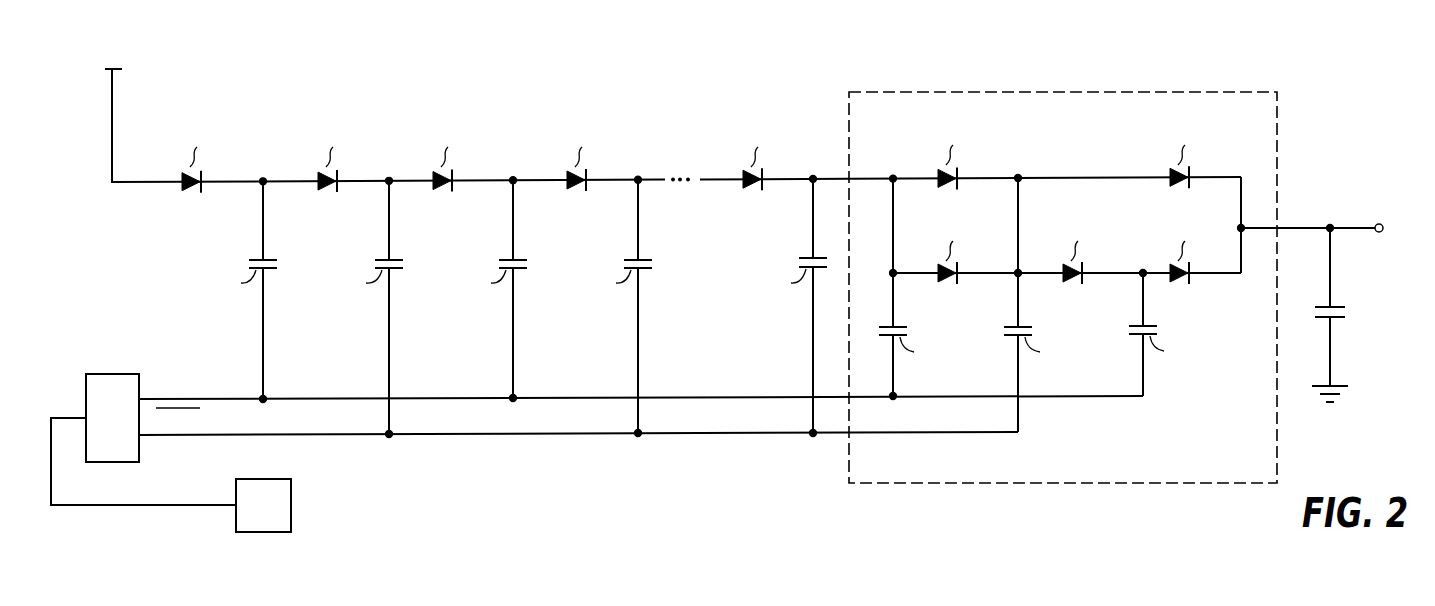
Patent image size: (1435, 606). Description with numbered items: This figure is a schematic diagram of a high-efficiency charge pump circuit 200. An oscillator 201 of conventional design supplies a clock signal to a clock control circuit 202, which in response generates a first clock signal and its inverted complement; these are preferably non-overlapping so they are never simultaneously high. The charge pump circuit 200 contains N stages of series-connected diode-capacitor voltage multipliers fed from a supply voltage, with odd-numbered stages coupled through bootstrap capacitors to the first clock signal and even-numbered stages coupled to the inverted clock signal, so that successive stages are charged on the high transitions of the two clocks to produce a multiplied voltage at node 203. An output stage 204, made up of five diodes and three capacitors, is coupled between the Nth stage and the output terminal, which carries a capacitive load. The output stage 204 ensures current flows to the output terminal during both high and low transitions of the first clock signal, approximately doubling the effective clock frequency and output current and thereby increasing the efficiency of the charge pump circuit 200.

The charge pump circuit 200 is at (500, 101).
The oscillator 201 is at (291, 510).
The clock control circuit 202 is at (120, 374).
The node 203 is at (814, 174).
The output stage 204 is at (1278, 124).